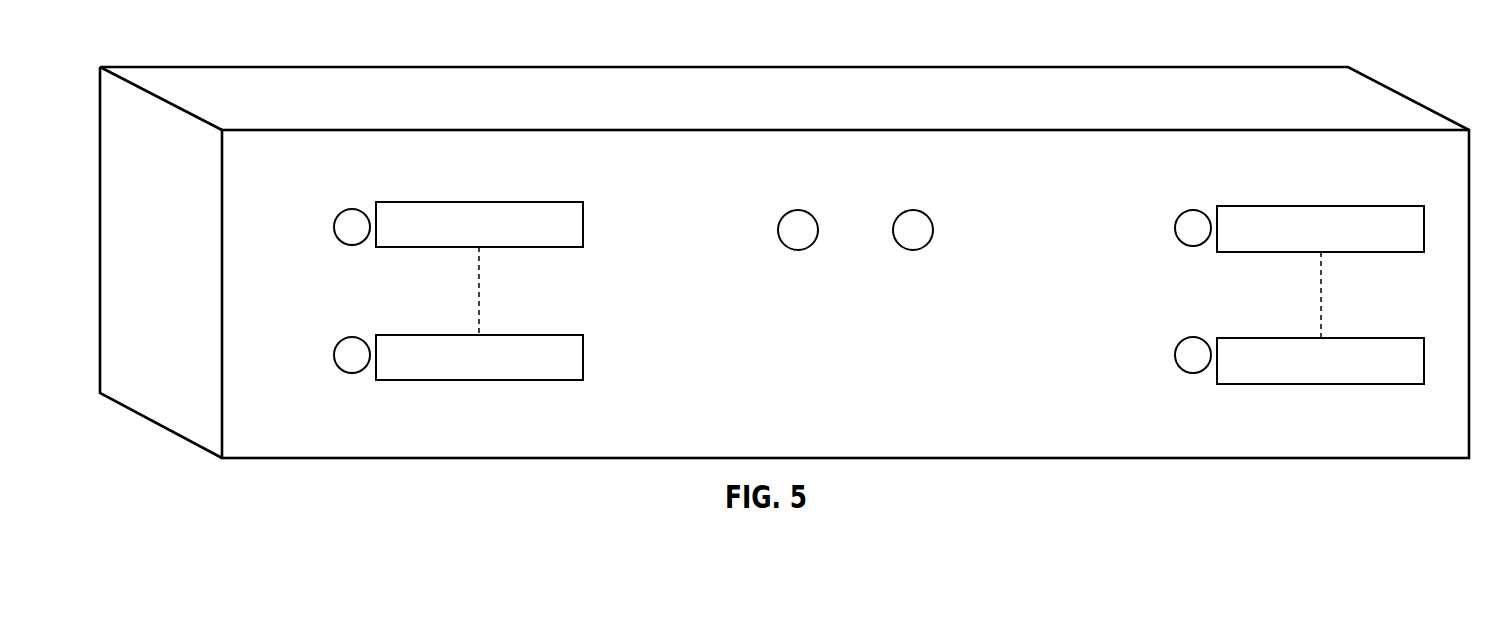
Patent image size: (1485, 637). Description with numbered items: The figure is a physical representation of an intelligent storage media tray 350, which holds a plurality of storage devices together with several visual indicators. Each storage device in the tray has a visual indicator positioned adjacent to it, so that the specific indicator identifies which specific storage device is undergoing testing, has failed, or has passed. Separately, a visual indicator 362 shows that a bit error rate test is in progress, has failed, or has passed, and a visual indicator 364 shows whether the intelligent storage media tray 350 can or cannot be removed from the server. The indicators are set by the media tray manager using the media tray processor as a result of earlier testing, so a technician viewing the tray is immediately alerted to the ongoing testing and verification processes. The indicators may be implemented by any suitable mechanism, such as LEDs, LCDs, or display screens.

The intelligent storage media tray 350 is at (171, 66).
The visual indicator 362 is at (786, 215).
The visual indicator 364 is at (900, 215).